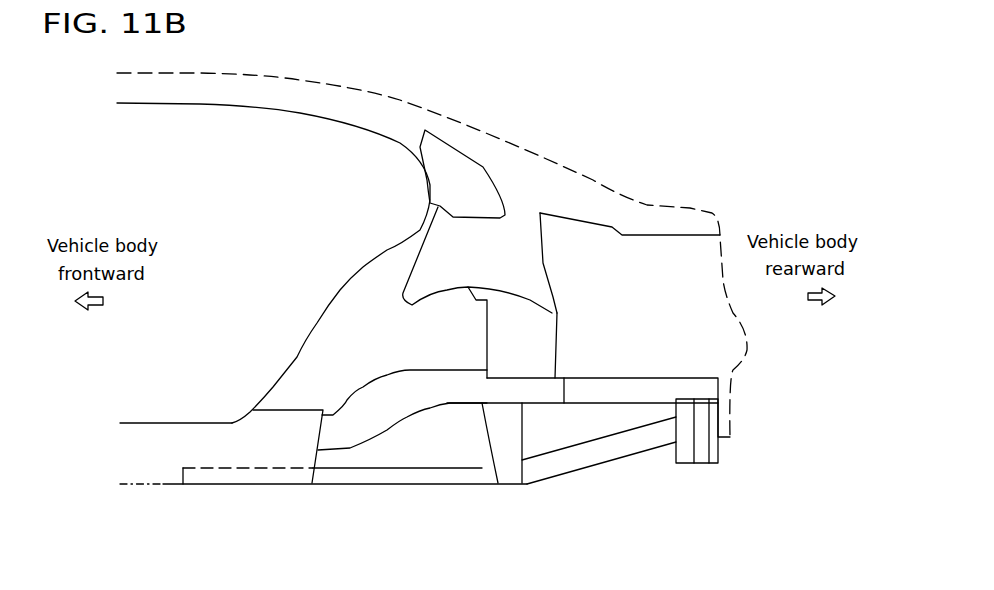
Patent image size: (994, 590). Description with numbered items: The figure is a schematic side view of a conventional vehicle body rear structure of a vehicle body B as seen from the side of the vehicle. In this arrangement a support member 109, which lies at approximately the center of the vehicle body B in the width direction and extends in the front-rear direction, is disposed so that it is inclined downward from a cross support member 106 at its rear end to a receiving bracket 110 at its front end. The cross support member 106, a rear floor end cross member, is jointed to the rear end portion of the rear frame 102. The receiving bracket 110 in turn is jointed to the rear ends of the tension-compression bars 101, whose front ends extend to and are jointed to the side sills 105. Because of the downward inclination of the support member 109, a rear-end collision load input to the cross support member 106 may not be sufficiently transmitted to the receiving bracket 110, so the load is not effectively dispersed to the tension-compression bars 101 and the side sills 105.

The vehicle body B is at (502, 142).
The tension-compression bar 101 is at (365, 475).
The rear frame 102 is at (620, 380).
The side sill 105 is at (197, 443).
The cross support member 106 is at (702, 450).
The support member 109 is at (602, 453).
The receiving bracket 110 is at (483, 435).